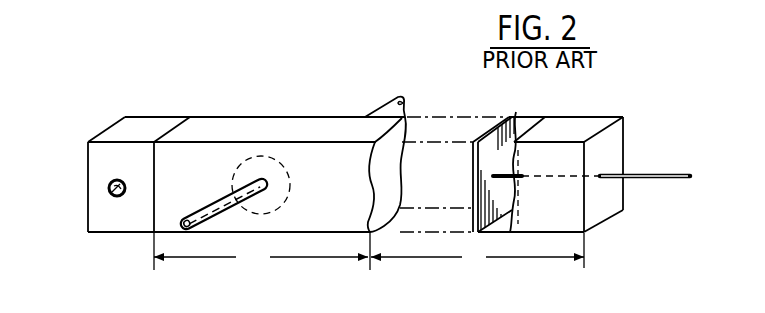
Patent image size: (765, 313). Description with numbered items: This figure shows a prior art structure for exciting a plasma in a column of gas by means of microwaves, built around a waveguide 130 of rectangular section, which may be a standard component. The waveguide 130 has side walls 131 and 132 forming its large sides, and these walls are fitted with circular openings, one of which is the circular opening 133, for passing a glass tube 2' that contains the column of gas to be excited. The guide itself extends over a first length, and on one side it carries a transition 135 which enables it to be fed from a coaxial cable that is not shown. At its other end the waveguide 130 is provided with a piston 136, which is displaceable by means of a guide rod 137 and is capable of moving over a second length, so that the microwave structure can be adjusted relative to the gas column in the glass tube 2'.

The glass tube 2' is at (224, 201).
The waveguide 130 is at (320, 236).
The side wall 131 is at (168, 162).
The side wall 132 is at (236, 117).
The circular opening 133 is at (272, 181).
The transition 135 is at (98, 222).
The piston 136 is at (518, 119).
The guide rod 137 is at (641, 176).